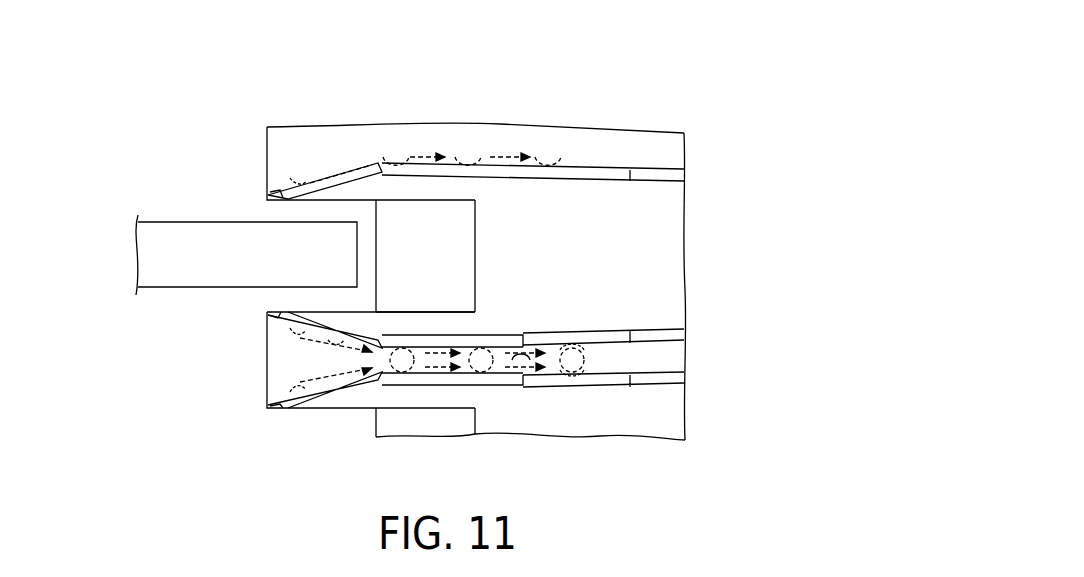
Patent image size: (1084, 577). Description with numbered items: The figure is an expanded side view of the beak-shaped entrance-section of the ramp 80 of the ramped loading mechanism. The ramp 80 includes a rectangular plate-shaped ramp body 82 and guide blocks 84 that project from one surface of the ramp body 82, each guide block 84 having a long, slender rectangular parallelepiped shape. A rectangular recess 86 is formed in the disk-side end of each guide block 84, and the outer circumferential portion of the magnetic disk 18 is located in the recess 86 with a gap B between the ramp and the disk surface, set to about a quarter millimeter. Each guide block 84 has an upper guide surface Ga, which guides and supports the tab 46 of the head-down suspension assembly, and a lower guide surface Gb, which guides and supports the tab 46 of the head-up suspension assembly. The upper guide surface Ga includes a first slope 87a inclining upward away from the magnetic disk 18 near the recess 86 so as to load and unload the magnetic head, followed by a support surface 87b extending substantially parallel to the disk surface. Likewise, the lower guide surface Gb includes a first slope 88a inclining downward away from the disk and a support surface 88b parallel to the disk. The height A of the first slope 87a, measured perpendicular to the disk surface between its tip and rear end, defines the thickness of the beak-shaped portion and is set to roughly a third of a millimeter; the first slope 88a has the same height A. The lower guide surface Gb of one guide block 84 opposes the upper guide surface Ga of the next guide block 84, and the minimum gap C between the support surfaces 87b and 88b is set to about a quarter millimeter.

The magnetic disk 18 is at (160, 290).
The tab 46 is at (463, 158).
The ramp 80 is at (573, 113).
The ramp body 82 is at (686, 150).
The guide block 84 is at (655, 247).
The recess 86 is at (302, 310).
The first slope 87a is at (350, 163).
The support surface 87b is at (600, 170).
The first slope 88a is at (333, 343).
The support surface 88b is at (515, 347).
The upper guide surface Ga is at (648, 161).
The lower guide surface Gb is at (643, 346).
The height A is at (380, 163).
The gap B is at (267, 201).
The minimum gap C is at (382, 373).